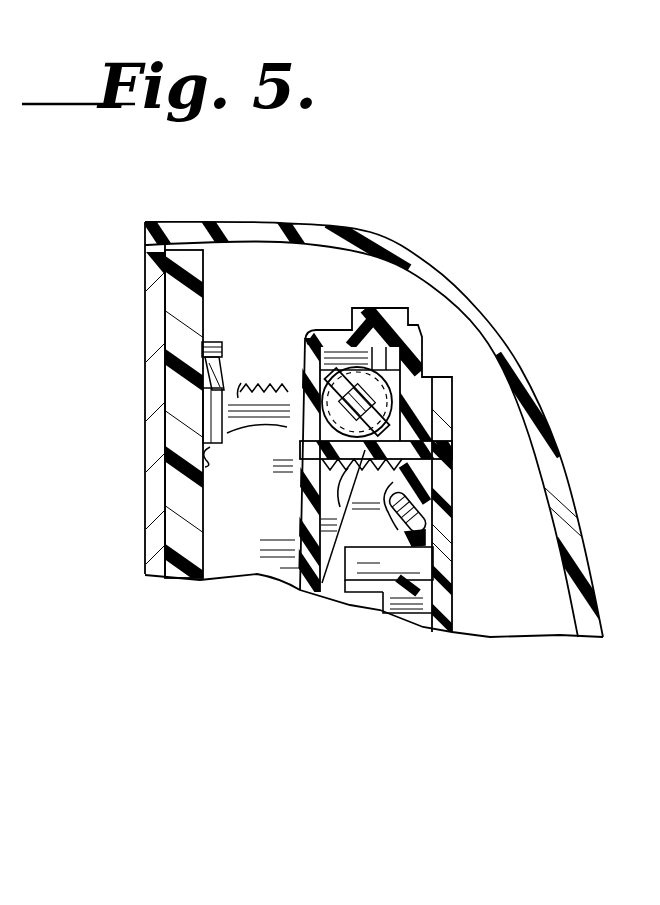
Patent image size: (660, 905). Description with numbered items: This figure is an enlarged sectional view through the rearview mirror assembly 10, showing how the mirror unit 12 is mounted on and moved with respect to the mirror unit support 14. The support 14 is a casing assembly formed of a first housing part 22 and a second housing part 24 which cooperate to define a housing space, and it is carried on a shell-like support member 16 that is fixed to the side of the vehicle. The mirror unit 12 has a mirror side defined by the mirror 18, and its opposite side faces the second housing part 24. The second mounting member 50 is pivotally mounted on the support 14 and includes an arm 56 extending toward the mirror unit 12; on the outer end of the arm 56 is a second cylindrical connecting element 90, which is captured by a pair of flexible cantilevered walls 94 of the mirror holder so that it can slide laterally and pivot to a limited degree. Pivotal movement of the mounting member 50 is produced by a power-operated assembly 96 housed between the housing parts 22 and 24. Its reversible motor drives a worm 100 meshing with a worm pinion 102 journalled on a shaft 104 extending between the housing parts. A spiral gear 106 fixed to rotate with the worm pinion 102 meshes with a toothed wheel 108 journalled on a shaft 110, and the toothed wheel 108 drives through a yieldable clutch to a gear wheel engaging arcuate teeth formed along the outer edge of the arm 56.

The rearview mirror assembly 10 is at (472, 210).
The mirror unit 12 is at (105, 398).
The mirror unit support 14 is at (356, 459).
The support member 16 is at (387, 422).
The mirror 18 is at (126, 411).
The first housing part 22 is at (470, 505).
The second housing part 24 is at (374, 605).
The second mounting member 50 is at (459, 577).
The arm 56 is at (258, 381).
The second cylindrical connecting element 90 is at (142, 419).
The flexible cantilevered walls 94 is at (232, 387).
The power-operated assembly 96 is at (454, 364).
The worm 100 is at (466, 520).
The worm pinion 102 is at (460, 536).
The shaft 104 is at (255, 514).
The spiral gear 106 is at (377, 530).
The toothed wheel 108 is at (350, 341).
The shaft 110 is at (338, 448).